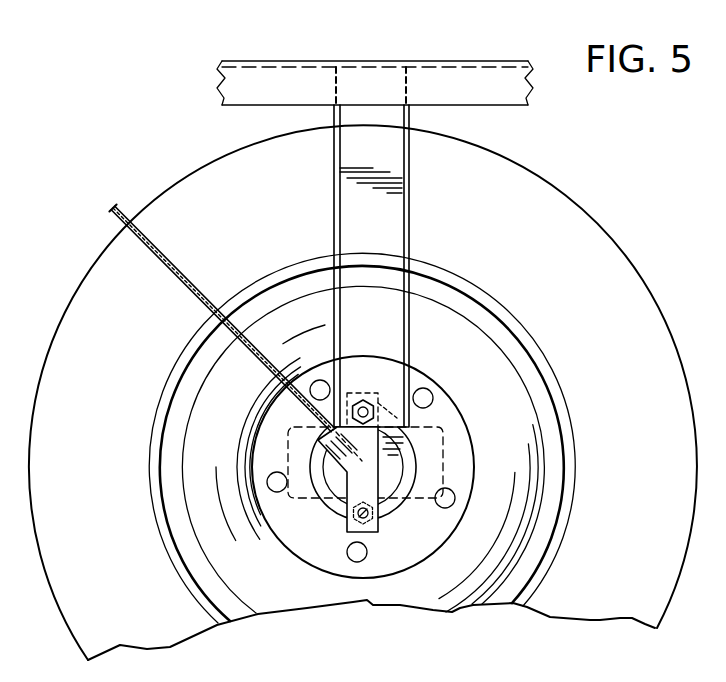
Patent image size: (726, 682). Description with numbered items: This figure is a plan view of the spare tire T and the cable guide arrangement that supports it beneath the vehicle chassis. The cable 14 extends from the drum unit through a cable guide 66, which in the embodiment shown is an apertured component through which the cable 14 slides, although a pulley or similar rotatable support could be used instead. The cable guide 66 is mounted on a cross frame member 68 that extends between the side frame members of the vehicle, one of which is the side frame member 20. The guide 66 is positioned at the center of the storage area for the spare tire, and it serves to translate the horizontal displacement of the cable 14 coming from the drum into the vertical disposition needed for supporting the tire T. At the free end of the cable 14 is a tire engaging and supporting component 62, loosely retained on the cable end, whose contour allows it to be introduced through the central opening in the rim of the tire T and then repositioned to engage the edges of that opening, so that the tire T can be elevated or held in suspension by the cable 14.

The tire T is at (75, 298).
The cable 14 is at (193, 286).
The side frame member 20 is at (461, 75).
The tire engaging and supporting component 62 is at (400, 448).
The cable guide 66 is at (376, 470).
The cross frame member 68 is at (389, 217).